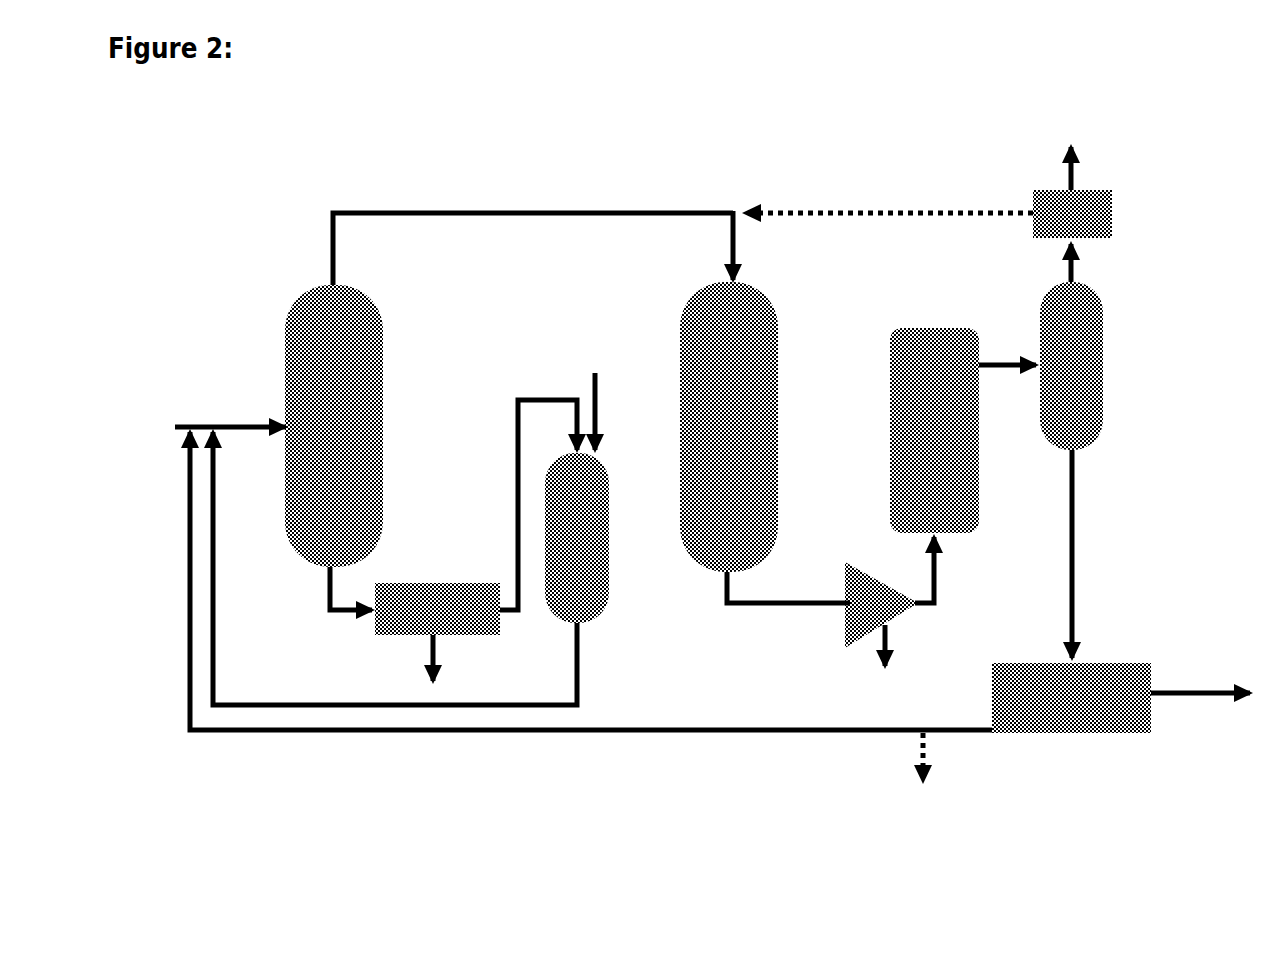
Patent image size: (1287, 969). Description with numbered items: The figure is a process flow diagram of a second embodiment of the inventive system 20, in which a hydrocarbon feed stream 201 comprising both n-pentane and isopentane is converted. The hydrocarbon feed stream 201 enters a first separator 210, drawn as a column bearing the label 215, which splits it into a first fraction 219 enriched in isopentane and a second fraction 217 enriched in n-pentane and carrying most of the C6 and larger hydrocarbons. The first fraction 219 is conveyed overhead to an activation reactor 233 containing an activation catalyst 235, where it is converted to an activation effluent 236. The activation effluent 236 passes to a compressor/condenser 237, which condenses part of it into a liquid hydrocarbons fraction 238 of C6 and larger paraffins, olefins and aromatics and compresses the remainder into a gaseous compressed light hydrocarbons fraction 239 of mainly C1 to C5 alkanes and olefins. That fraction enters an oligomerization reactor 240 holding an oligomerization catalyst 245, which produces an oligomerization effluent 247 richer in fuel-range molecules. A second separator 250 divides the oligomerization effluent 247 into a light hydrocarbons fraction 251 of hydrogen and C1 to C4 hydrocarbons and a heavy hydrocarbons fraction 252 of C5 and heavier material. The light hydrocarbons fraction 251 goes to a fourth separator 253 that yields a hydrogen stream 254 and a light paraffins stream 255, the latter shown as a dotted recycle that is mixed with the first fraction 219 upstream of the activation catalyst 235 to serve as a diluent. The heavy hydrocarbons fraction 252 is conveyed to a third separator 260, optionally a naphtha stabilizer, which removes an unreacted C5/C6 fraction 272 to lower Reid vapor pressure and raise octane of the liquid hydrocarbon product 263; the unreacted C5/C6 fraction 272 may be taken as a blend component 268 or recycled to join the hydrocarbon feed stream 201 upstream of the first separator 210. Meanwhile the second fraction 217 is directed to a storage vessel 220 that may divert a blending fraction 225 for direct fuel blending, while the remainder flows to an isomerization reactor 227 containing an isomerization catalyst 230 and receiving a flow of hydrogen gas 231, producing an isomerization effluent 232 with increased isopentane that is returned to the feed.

The system 20 is at (278, 155).
The hydrocarbon feed stream 201 is at (203, 432).
The first separator 210 is at (310, 452).
The first reactor 215 is at (333, 420).
The second fraction 217 is at (347, 618).
The first fraction 219 is at (555, 208).
The storage vessel 220 is at (483, 583).
The blending fraction 225 is at (438, 648).
The isomerization reactor 227 is at (615, 538).
The isomerization catalyst 230 is at (577, 537).
The flow of hydrogen gas 231 is at (593, 396).
The isomerization effluent 232 is at (587, 643).
The activation reactor 233 is at (693, 290).
The activation catalyst 235 is at (729, 427).
The activation effluent 236 is at (790, 612).
The compressor/condenser 237 is at (885, 577).
The liquid hydrocarbons fraction 238 is at (895, 640).
The compressed light hydrocarbons fraction 239 is at (945, 565).
The oligomerization reactor 240 is at (900, 430).
The oligomerization catalyst 245 is at (935, 424).
The oligomerization effluent 247 is at (1015, 355).
The second separator 250 is at (1102, 325).
The light hydrocarbons fraction 251 is at (1078, 262).
The heavy hydrocarbons fraction 252 is at (1078, 540).
The fourth separator 253 is at (1115, 215).
The hydrogen stream 254 is at (1085, 155).
The light paraffins stream 255 is at (880, 207).
The third separator 260 is at (1102, 660).
The liquid hydrocarbon product 263 is at (1178, 685).
The blend component 268 is at (935, 750).
The unreacted C5/C6 fraction 272 is at (715, 738).